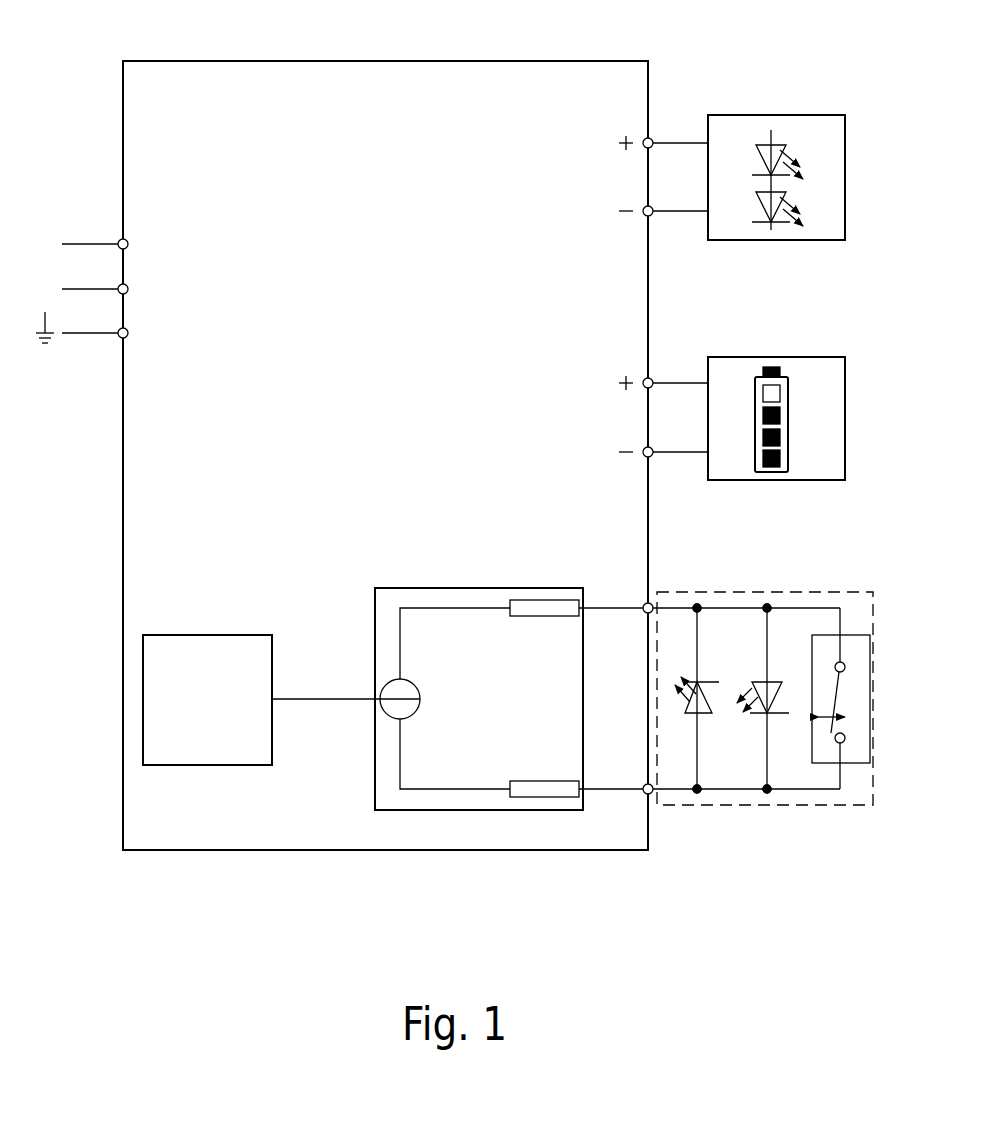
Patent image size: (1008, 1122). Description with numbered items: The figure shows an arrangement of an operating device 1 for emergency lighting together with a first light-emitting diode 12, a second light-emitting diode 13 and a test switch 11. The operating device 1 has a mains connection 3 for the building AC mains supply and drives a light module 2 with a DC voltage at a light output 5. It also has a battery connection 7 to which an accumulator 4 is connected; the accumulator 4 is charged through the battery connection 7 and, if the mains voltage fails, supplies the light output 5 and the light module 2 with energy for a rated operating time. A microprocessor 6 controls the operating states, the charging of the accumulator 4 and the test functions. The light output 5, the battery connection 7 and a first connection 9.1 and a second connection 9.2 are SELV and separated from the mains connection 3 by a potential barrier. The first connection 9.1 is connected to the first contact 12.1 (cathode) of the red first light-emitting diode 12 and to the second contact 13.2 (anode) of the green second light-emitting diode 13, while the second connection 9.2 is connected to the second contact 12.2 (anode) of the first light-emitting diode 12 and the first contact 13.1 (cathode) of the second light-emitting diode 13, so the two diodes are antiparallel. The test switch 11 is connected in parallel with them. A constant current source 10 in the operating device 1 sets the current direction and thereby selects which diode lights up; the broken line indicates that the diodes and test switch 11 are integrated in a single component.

The operating device 1 is at (383, 851).
The light module 2 is at (775, 114).
The mains connection 3 is at (92, 220).
The accumulator 4 is at (775, 356).
The light output 5 is at (677, 100).
The microprocessor 6 is at (203, 634).
The battery connection 7 is at (677, 340).
The first connection 9.1 is at (645, 603).
The second connection 9.2 is at (647, 795).
The constant current source 10 is at (405, 587).
The test switch 11 is at (850, 634).
The first light-emitting diode 12 is at (681, 715).
The first contact of the first light-emitting diode 12.1 is at (699, 603).
The second contact of the first light-emitting diode 12.2 is at (698, 796).
The second light-emitting diode 13 is at (745, 714).
The first contact of the second light-emitting diode 13.1 is at (768, 796).
The second contact of the second light-emitting diode 13.2 is at (769, 603).